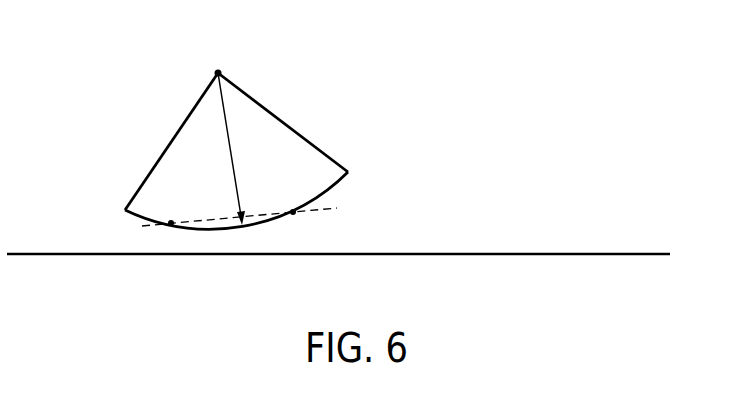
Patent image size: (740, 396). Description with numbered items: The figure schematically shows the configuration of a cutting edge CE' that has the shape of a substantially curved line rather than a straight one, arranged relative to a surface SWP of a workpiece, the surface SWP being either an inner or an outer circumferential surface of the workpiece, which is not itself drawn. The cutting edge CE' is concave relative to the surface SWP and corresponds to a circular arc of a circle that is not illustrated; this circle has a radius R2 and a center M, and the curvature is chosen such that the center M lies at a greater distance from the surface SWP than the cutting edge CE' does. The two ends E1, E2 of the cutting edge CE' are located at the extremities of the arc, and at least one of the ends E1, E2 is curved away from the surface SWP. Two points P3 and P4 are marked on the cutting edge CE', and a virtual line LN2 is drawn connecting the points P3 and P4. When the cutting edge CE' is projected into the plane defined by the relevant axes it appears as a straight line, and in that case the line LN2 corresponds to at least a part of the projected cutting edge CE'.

The center M is at (226, 70).
The end of the cutting edge E1 is at (125, 208).
The end of the cutting edge E2 is at (350, 168).
The radius R2 is at (236, 162).
The cutting edge CE' is at (266, 200).
The point on the cutting edge P3 is at (171, 226).
The point on the cutting edge P4 is at (296, 215).
The line LN2 is at (213, 229).
The surface SWP is at (630, 253).